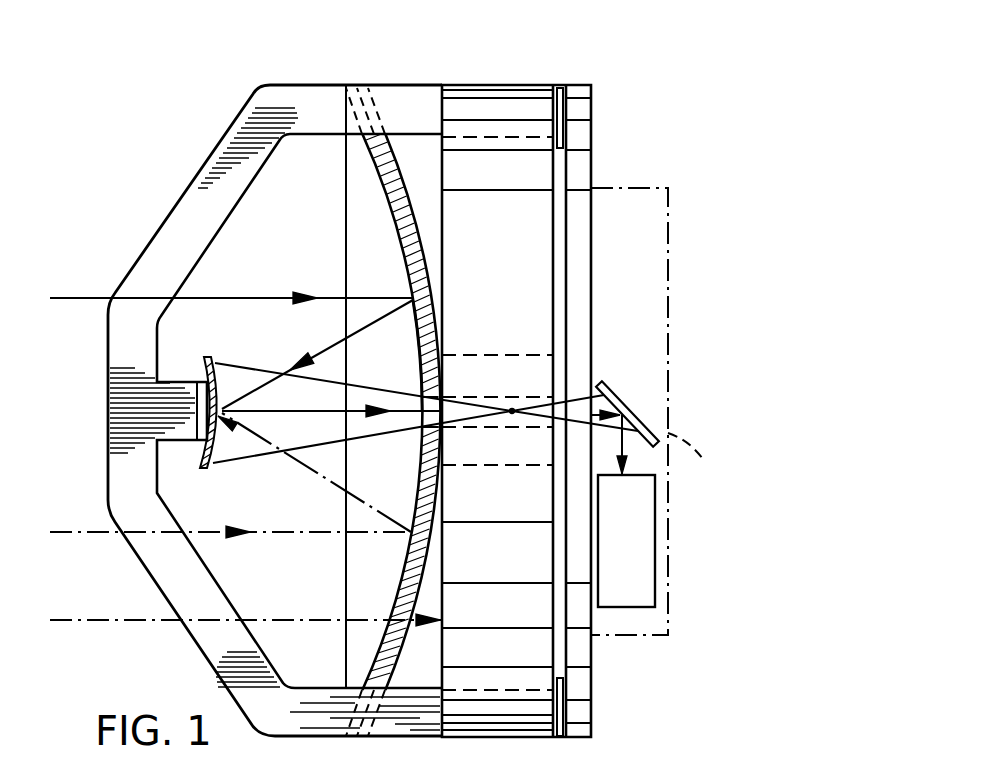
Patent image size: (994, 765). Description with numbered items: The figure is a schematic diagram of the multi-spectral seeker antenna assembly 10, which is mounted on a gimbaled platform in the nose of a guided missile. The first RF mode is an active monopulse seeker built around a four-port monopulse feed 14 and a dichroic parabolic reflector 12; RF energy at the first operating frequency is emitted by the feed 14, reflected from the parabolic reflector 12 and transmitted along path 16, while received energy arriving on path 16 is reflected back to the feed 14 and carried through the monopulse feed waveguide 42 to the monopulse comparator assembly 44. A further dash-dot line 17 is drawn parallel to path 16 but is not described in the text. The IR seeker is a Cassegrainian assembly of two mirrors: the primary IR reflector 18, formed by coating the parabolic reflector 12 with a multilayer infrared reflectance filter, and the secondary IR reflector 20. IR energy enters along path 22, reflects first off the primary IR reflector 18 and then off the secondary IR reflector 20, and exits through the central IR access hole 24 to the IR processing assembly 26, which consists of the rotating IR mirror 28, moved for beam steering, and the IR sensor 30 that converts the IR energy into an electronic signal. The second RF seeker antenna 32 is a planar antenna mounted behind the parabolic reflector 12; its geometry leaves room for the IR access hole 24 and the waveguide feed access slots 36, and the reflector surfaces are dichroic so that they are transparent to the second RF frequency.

The multi-spectral seeker antenna assembly 10 is at (188, 168).
The monopulse feed waveguide 42 is at (178, 222).
The waveguide feed access slots 36 is at (365, 731).
The four-port monopulse feed 14 is at (165, 412).
The primary IR reflector 18 is at (386, 239).
The parabolic reflector 12 is at (418, 334).
The IR access hole 24 is at (420, 424).
The secondary IR reflector 20 is at (212, 446).
The path 22 is at (88, 298).
The path 16 is at (97, 532).
The incoming ray 17 is at (150, 622).
The second RF seeker antenna 32 is at (497, 710).
The monopulse comparator assembly 44 is at (580, 650).
The rotating IR mirror 28 is at (608, 393).
The IR processing assembly 26 is at (696, 459).
The IR sensor 30 is at (656, 590).